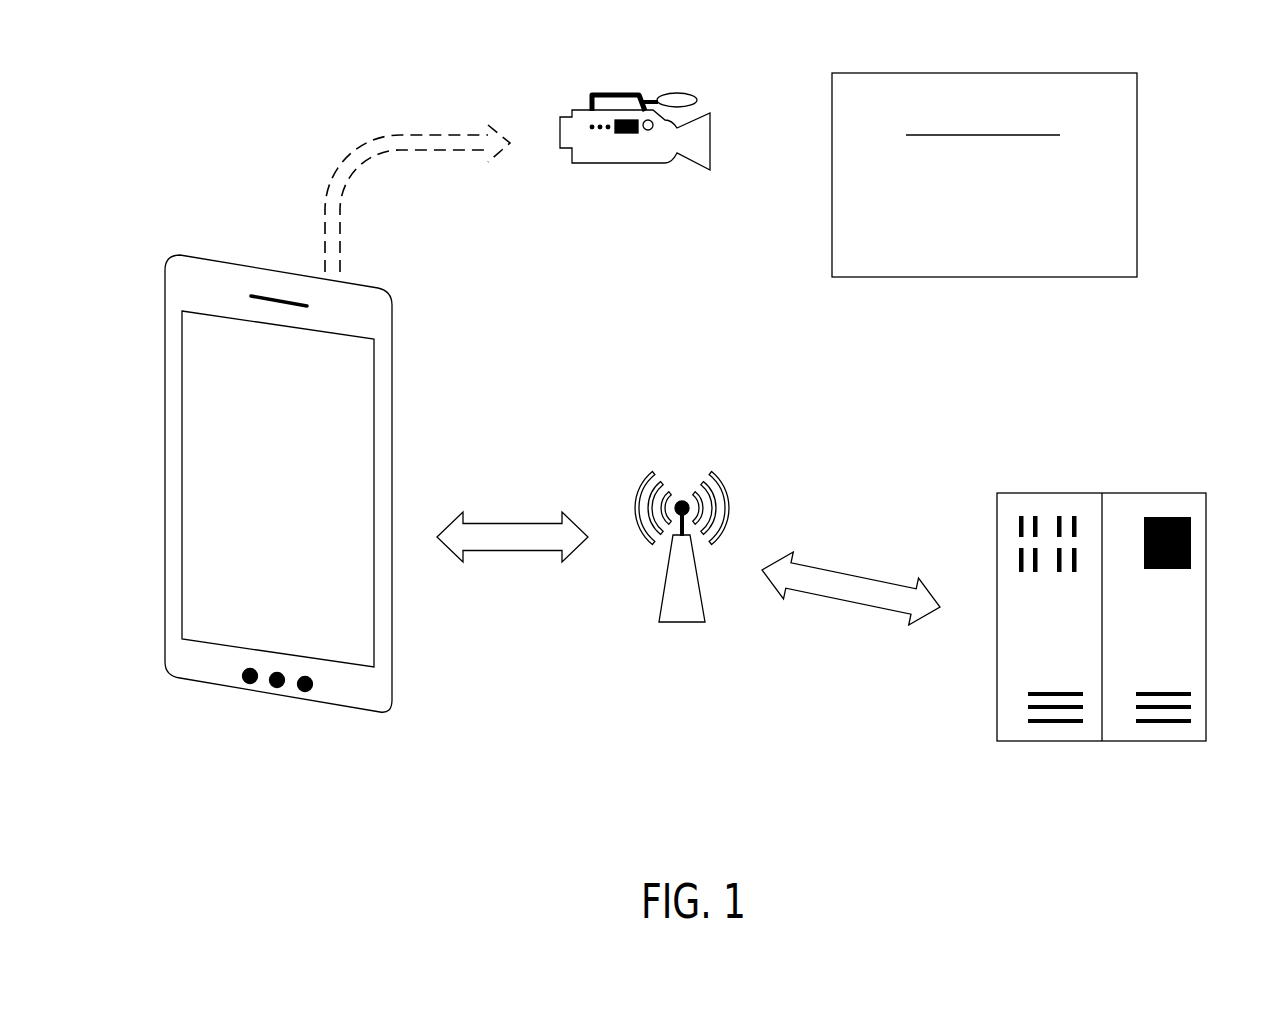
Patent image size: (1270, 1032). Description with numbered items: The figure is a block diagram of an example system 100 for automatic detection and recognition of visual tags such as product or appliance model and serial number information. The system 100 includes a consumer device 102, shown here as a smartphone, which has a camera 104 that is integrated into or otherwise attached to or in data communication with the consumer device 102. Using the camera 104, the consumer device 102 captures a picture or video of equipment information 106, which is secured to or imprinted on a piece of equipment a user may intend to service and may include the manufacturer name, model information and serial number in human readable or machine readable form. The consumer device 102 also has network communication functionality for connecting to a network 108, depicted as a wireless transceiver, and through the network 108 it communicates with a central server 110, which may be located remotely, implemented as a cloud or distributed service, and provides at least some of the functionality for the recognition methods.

The system 100 is at (289, 94).
The consumer device 102 is at (402, 413).
The camera 104 is at (692, 92).
The equipment information 106 is at (1050, 277).
The network 108 is at (722, 482).
The central server 110 is at (1178, 492).